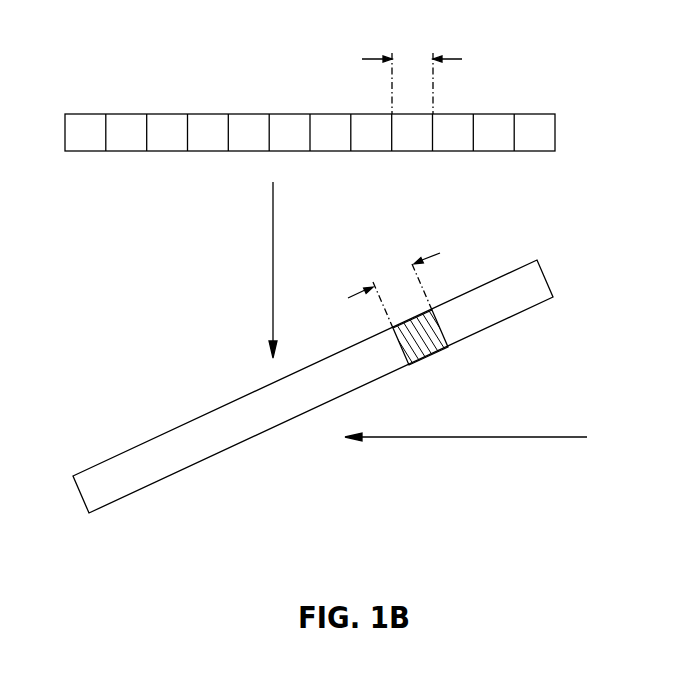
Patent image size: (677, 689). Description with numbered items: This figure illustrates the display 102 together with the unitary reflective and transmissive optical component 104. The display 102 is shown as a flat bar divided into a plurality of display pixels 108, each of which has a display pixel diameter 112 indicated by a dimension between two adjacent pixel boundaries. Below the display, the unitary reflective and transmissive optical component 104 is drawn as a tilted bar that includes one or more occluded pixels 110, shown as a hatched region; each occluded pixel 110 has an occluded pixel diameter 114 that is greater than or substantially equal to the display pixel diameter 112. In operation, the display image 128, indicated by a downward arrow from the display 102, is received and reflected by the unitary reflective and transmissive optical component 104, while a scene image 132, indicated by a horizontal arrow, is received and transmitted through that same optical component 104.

The display 102 is at (556, 132).
The unitary reflective and transmissive optical component 104 is at (543, 273).
The display pixels 108 is at (168, 114).
The occluded pixels 110 is at (432, 352).
The display pixel diameter 112 is at (450, 56).
The occluded pixel diameter 114 is at (432, 257).
The display image 128 is at (273, 223).
The scene image 132 is at (472, 440).